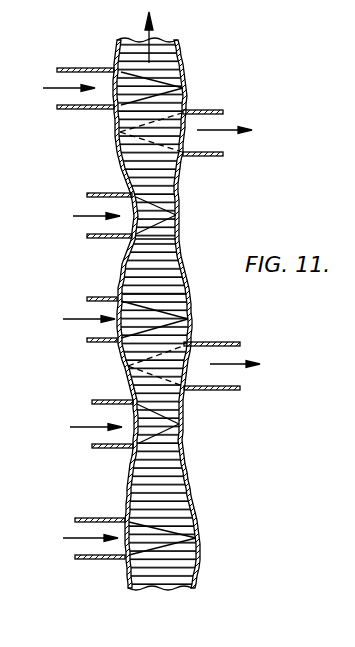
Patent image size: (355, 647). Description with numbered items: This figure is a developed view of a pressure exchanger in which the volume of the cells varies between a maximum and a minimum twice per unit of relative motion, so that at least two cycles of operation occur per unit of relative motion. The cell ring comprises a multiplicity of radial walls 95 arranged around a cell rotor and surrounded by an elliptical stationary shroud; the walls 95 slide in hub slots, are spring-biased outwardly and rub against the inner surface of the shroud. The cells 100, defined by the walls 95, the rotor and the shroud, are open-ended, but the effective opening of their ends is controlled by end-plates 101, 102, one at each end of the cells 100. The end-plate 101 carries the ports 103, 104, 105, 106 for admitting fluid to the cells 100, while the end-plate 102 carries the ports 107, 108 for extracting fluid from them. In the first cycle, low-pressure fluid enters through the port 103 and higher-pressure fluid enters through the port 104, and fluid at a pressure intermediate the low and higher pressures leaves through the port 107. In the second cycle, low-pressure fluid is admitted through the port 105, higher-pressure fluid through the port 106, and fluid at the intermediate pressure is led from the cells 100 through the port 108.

The radial walls 95 is at (178, 294).
The cells 100 is at (166, 239).
The end-plate 101 is at (119, 281).
The end-plate 102 is at (192, 318).
The port 103 is at (112, 83).
The port 104 is at (134, 434).
The port 105 is at (116, 328).
The port 106 is at (128, 224).
The port 107 is at (190, 372).
The port 108 is at (193, 118).